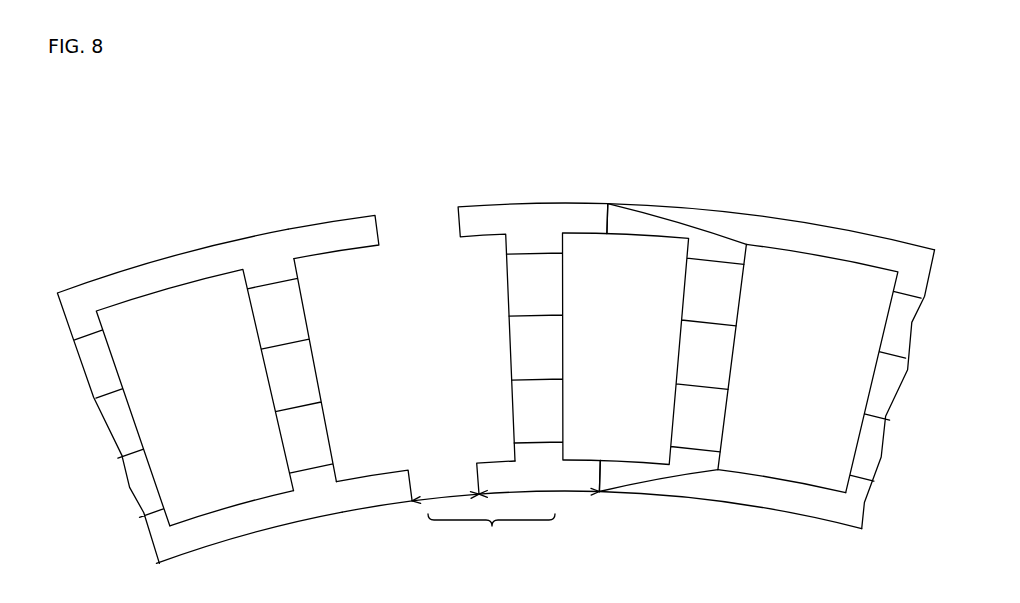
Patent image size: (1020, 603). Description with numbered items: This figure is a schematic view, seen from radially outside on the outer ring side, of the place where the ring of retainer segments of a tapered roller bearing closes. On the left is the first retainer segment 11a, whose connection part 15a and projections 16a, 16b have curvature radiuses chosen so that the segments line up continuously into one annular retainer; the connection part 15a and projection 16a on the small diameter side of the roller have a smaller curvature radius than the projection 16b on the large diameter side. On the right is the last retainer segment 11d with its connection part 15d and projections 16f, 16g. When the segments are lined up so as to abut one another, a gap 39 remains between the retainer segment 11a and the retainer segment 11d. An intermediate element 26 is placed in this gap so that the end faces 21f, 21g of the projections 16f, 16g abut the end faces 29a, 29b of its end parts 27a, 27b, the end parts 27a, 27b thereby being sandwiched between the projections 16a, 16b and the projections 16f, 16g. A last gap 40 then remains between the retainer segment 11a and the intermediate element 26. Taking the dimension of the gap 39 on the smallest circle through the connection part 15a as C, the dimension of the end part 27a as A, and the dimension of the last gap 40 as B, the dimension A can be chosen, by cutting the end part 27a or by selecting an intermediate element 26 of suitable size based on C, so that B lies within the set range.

The first retainer segment 11a is at (234, 381).
The last retainer segment 11d is at (766, 345).
The connection part 15a is at (235, 525).
The yoke portion 15d is at (782, 495).
The projection 16a is at (375, 490).
The projection 16b is at (332, 235).
The projection 16f is at (640, 480).
The projection 16g is at (647, 220).
The intermediate element 26 is at (601, 287).
The end part 27a is at (497, 477).
The end part 27b is at (482, 222).
The end face 21f is at (600, 480).
The end face 21g is at (608, 213).
The end face 29a is at (601, 470).
The end face 29b is at (607, 223).
The gap 39 is at (607, 169).
The last gap 40 is at (447, 477).
The dimension of the end part A is at (539, 505).
The dimension of the last gap B is at (445, 507).
The dimension of the gap C is at (491, 531).